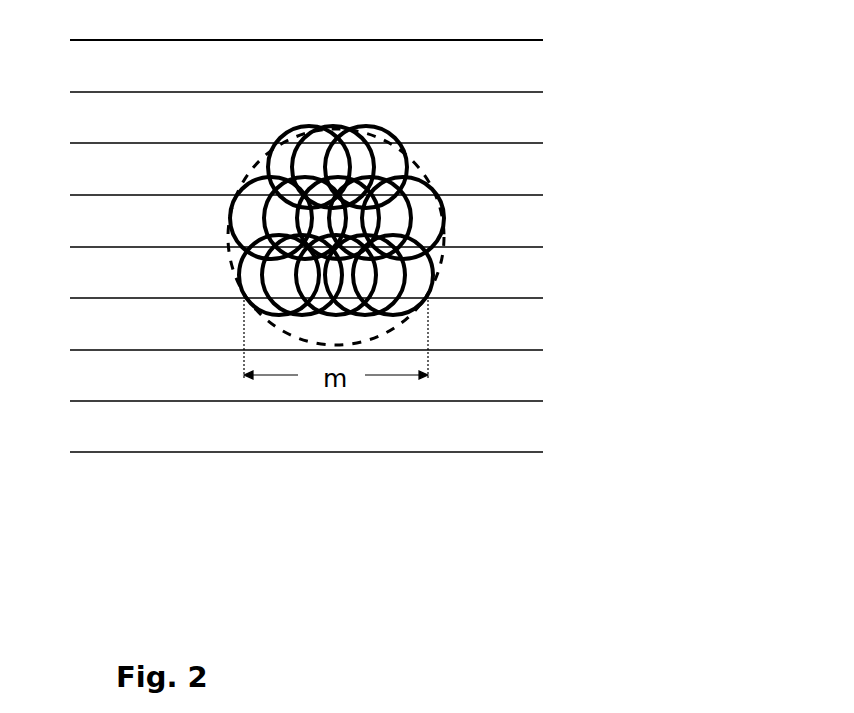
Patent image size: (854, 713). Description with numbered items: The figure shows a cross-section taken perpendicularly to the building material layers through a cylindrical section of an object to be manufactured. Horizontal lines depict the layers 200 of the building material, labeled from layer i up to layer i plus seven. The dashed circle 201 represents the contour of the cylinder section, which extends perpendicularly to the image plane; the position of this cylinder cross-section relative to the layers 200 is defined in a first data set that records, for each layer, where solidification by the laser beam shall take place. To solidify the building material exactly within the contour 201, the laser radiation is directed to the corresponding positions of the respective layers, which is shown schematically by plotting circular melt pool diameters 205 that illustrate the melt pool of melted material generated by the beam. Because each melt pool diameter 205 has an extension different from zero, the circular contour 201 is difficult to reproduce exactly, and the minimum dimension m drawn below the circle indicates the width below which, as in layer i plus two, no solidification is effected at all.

The layers 200 is at (505, 70).
The dashed circle 201 is at (425, 163).
The melt pool diameter 205 is at (415, 220).